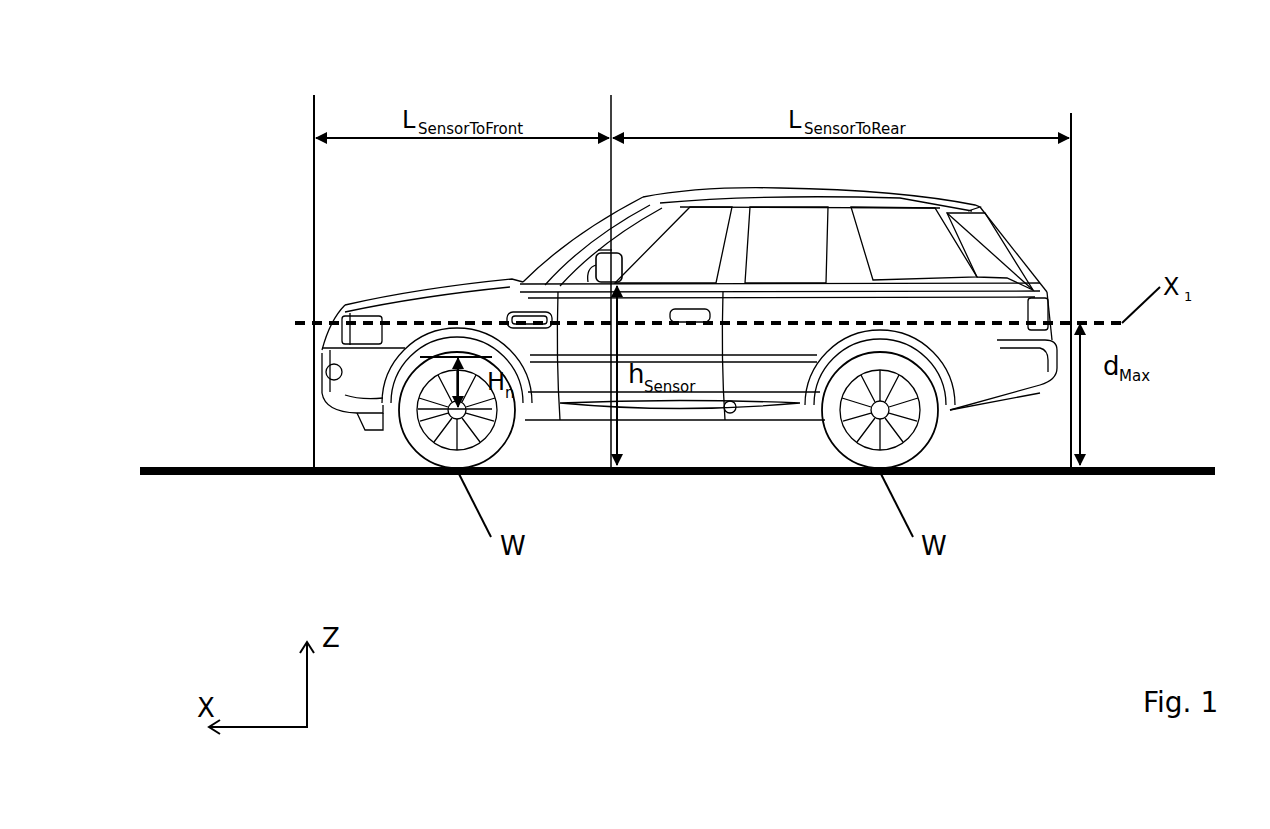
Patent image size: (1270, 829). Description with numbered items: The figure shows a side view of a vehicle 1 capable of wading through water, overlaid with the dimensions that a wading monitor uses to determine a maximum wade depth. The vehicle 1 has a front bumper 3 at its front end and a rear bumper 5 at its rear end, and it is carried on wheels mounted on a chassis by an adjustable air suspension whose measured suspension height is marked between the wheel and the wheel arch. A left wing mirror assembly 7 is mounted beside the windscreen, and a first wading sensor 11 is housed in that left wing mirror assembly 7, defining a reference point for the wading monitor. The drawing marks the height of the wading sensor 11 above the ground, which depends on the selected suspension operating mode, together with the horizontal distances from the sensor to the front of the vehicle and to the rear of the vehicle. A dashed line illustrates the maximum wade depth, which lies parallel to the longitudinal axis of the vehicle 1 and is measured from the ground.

The vehicle 1 is at (1005, 62).
The front bumper 3 is at (340, 382).
The rear bumper 5 is at (1047, 368).
The left wing mirror assembly 7 is at (603, 248).
The first wading sensor 11 is at (592, 260).